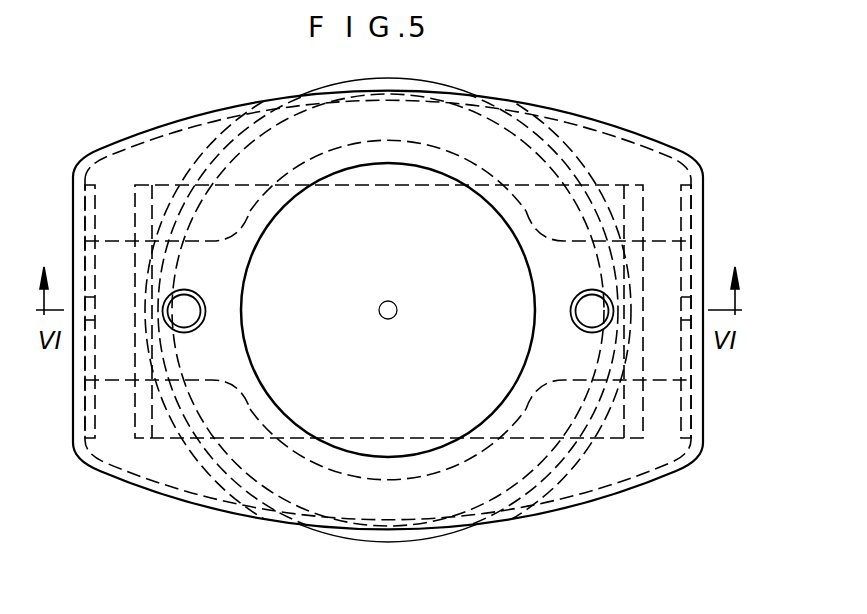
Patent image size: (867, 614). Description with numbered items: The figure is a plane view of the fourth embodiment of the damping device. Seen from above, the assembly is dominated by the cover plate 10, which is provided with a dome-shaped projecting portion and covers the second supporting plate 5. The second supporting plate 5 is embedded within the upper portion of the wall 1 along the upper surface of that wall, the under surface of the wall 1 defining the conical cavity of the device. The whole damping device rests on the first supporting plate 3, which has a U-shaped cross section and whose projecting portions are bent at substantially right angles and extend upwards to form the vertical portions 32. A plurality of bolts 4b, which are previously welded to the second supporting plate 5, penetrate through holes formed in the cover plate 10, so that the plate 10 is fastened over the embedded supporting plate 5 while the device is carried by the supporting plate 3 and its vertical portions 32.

The wall 1 is at (262, 518).
The first supporting plate 3 is at (536, 426).
The bolts 4b is at (200, 297).
The second supporting plate 5 is at (483, 168).
The cover plate 10 is at (243, 103).
The vertical portion 32 is at (643, 440).